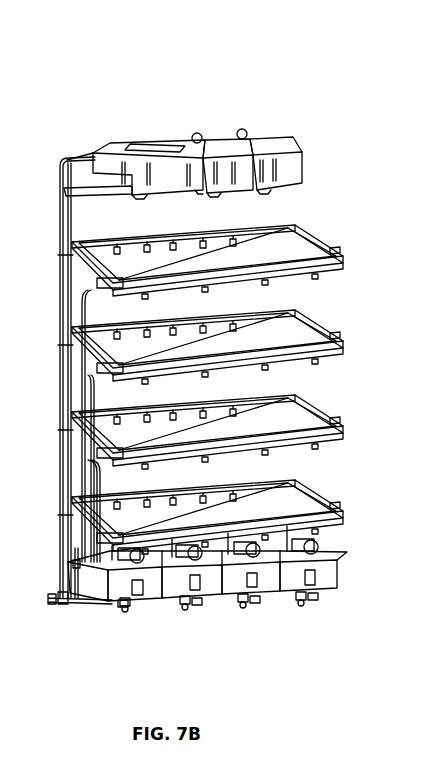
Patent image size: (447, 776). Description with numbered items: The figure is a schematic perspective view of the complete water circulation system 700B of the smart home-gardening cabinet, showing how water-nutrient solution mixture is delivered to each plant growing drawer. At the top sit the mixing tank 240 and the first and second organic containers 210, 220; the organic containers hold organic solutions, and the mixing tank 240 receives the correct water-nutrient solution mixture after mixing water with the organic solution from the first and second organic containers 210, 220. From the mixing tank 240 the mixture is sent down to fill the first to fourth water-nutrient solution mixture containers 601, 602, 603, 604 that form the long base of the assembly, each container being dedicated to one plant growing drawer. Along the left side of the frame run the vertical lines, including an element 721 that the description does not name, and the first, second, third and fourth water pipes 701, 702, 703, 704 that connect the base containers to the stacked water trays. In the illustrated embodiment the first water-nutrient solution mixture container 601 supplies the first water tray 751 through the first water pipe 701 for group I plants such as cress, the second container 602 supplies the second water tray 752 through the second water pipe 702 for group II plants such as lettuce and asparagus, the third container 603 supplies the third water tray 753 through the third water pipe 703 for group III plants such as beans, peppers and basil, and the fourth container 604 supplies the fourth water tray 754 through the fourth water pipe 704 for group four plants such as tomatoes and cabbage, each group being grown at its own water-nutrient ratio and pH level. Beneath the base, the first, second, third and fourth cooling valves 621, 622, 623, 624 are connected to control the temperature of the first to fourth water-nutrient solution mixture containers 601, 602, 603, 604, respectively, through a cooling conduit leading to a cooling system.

The complete water circulation system 700B is at (201, 90).
The mixing tank 240 is at (105, 152).
The first organic container 210 is at (212, 146).
The second organic container 220 is at (268, 150).
The support frame 721 is at (72, 213).
The first water pipe 701 is at (88, 312).
The second water pipe 702 is at (95, 400).
The third water pipe 703 is at (99, 480).
The fourth water pipe 704 is at (75, 548).
The first water tray 751 is at (345, 258).
The second water tray 752 is at (345, 343).
The third water tray 753 is at (345, 428).
The fourth water tray 754 is at (345, 513).
The first water-nutrient solution mixture container 601 is at (150, 600).
The second water-nutrient solution mixture container 602 is at (212, 597).
The third water-nutrient solution mixture container 603 is at (265, 593).
The fourth water-nutrient solution mixture container 604 is at (322, 592).
The first cooling valve 621 is at (124, 611).
The second cooling valve 622 is at (196, 606).
The third cooling valve 623 is at (253, 605).
The fourth cooling valve 624 is at (312, 600).